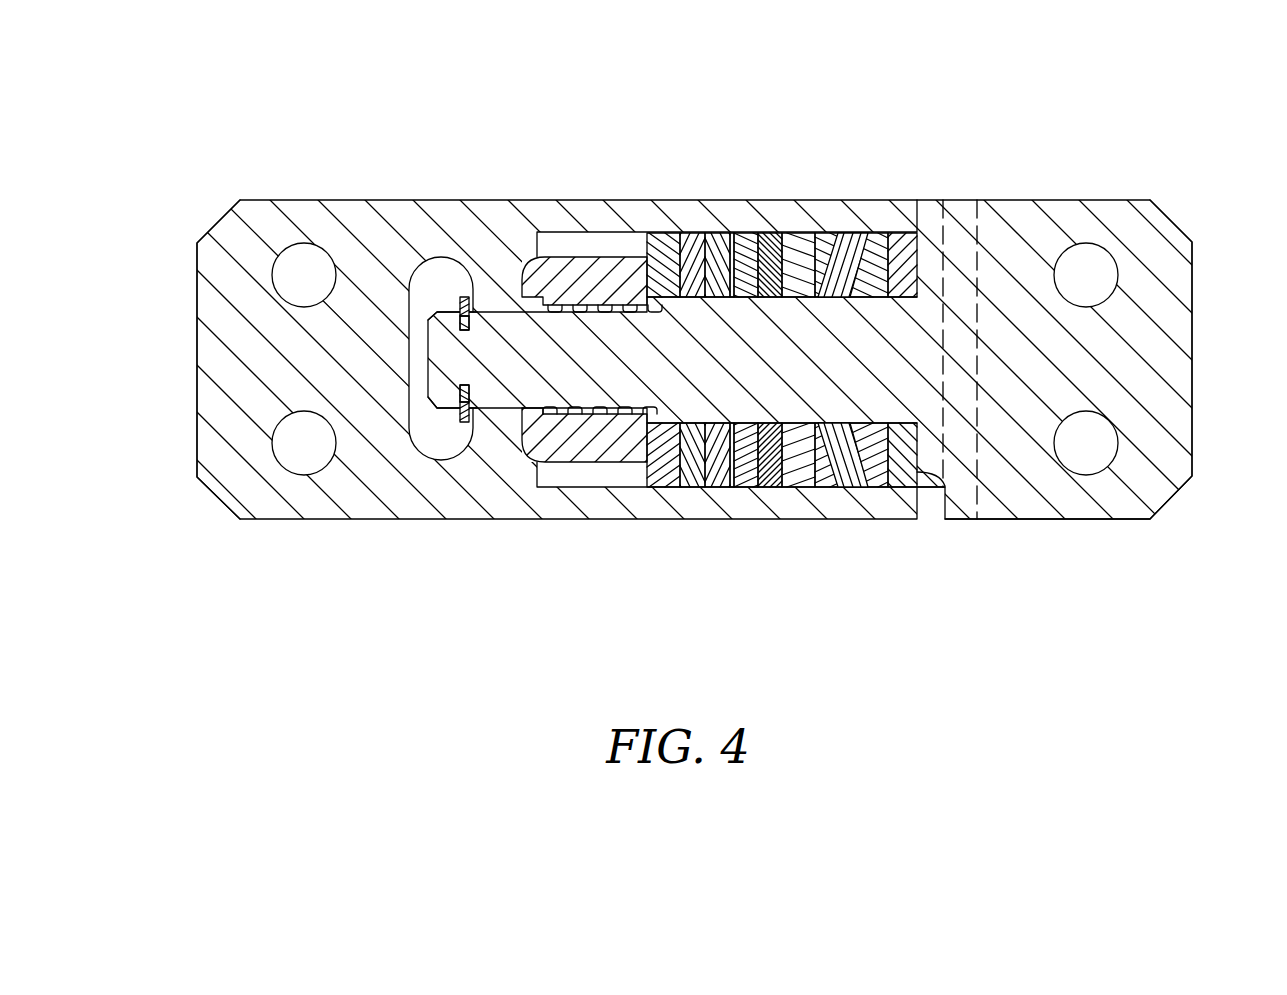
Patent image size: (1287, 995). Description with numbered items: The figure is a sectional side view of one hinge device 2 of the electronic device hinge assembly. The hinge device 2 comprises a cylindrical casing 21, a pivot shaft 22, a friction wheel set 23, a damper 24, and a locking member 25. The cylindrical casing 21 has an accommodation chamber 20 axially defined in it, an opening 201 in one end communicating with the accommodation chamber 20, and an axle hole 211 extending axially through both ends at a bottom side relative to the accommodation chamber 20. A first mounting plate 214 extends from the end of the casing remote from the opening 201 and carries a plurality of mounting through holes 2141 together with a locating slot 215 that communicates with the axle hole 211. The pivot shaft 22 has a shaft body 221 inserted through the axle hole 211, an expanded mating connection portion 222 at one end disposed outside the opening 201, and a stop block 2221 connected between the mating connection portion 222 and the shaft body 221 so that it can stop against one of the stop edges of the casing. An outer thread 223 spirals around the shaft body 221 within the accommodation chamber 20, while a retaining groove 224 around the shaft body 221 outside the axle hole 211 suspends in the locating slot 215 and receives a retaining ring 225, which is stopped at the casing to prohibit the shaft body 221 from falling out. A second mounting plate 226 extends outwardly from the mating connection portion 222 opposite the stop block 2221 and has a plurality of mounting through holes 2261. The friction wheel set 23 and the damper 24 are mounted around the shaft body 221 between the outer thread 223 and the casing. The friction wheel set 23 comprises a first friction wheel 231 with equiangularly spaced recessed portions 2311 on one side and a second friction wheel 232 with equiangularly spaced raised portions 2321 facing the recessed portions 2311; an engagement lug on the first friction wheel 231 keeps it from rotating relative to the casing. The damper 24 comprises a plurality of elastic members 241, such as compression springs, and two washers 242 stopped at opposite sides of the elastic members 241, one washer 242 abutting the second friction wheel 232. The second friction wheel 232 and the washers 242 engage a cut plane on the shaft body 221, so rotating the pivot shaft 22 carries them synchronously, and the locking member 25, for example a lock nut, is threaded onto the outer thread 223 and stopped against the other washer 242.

The hinge device 2 is at (702, 321).
The accommodation chamber 20 is at (674, 344).
The cylindrical casing 21 is at (705, 328).
The axle hole 211 is at (487, 305).
The pivot shaft 22 is at (692, 92).
The shaft body 221 is at (689, 231).
The mating connection portion 222 is at (968, 258).
The stop block 2221 is at (928, 220).
The first mounting plate 214 is at (298, 331).
The mounting through holes 2141 is at (299, 243).
The locating slot 215 is at (409, 324).
The outer thread 223 is at (556, 412).
The retaining groove 224 is at (458, 297).
The retaining ring 225 is at (464, 298).
The second mounting plate 226 is at (1142, 383).
The mounting through holes 2261 is at (1118, 453).
The friction wheel set 23 is at (836, 335).
The first friction wheel 231 is at (897, 233).
The recessed portions 2311 is at (842, 275).
The second friction wheel 232 is at (825, 473).
The raised portions 2321 is at (870, 488).
The opening 201 is at (879, 265).
The damper 24 is at (692, 428).
The elastic members 241 is at (718, 468).
The washers 242 is at (665, 468).
The locking member 25 is at (577, 275).